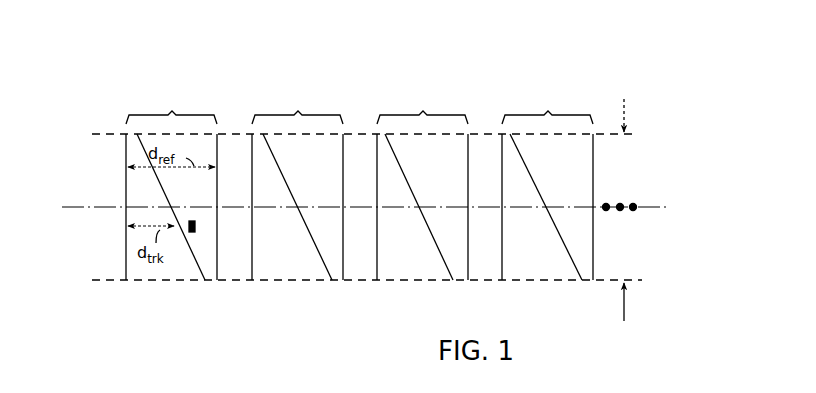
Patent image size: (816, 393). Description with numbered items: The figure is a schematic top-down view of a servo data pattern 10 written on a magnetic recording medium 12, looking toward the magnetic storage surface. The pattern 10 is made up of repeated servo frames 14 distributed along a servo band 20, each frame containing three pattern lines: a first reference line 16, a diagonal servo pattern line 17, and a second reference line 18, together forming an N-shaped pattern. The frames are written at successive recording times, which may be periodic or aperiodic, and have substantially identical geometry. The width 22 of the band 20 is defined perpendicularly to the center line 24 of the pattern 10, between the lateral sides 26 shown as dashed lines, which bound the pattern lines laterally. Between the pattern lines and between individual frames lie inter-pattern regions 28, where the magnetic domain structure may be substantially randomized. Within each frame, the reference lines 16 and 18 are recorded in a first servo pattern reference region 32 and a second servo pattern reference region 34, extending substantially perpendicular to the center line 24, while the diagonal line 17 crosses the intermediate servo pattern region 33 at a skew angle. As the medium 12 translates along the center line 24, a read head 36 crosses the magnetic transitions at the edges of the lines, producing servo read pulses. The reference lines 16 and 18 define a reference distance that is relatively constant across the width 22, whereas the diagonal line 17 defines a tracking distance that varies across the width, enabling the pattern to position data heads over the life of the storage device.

The servo data pattern 10 is at (441, 62).
The magnetic recording medium 12 is at (15, 240).
The servo frame 14 is at (121, 101).
The first reference line 16 is at (125, 181).
The diagonal servo pattern line 17 is at (164, 190).
The second reference line 18 is at (218, 258).
The servo band 20 is at (648, 259).
The width of band 22 is at (627, 100).
The center line 24 is at (68, 206).
The lateral sides 26 is at (364, 208).
The inter-pattern regions 28 is at (321, 195).
The first servo pattern reference region 32 is at (126, 284).
The servo pattern region 33 is at (180, 279).
The second servo pattern reference region 34 is at (217, 284).
The read head 36 is at (197, 228).